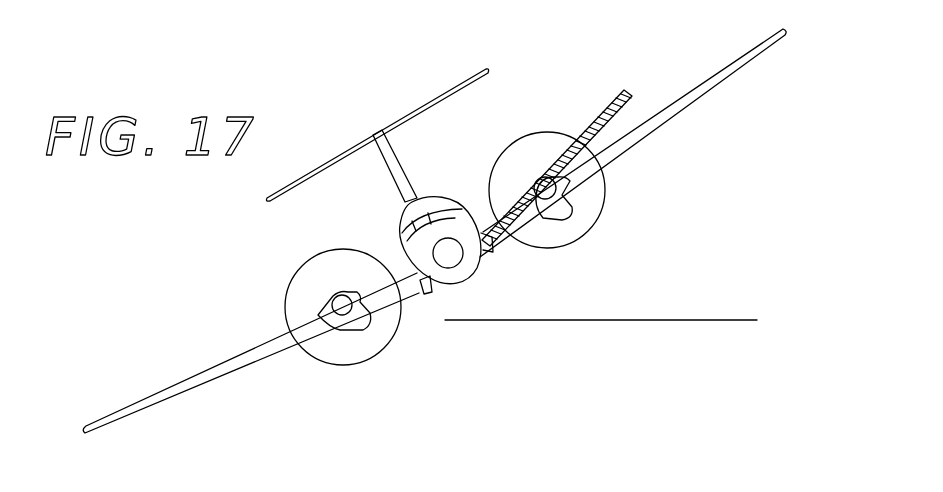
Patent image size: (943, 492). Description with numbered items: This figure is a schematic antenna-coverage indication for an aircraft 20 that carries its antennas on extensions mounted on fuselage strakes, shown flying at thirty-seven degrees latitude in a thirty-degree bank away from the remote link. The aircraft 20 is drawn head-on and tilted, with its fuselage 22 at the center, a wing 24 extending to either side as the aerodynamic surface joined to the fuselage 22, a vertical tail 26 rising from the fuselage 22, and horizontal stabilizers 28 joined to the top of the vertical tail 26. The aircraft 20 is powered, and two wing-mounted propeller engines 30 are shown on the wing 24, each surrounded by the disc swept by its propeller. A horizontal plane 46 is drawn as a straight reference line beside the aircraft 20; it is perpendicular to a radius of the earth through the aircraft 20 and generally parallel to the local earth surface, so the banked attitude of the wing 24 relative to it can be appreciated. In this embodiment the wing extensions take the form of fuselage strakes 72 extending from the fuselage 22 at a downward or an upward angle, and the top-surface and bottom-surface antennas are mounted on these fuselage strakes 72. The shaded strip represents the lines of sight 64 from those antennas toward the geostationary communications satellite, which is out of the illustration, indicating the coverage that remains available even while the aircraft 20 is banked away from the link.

The aircraft 20 is at (222, 227).
The fuselage 22 is at (398, 226).
The wing 24 is at (207, 370).
The vertical tail 26 is at (410, 170).
The horizontal stabilizers 28 is at (418, 106).
The wing-mounted propeller engines 30 is at (353, 290).
The horizontal plane 46 is at (667, 320).
The lines of sight 64 is at (606, 116).
The fuselage strakes 72 is at (492, 262).